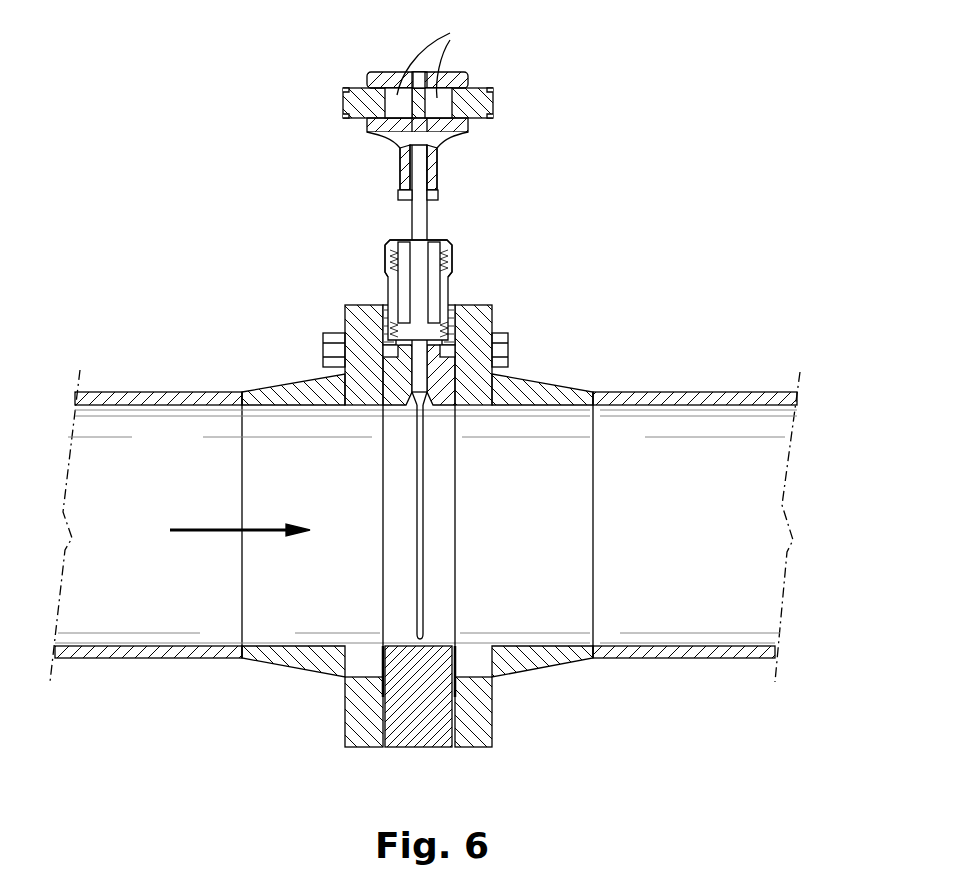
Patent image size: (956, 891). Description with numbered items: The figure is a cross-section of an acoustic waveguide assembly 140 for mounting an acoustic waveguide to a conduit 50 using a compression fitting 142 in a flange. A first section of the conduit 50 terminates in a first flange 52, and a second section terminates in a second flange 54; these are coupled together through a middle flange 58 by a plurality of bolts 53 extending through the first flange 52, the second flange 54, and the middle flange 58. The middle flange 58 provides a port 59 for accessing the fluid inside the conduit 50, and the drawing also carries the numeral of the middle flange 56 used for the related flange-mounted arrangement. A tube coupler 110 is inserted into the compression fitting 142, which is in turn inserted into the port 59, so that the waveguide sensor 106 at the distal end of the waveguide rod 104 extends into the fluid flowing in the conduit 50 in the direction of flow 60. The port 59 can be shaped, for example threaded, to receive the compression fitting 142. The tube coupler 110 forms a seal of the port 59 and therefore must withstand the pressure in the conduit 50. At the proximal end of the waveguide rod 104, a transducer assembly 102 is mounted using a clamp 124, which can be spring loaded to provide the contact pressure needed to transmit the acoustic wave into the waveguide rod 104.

The conduit 50 is at (648, 397).
The first flange 52 is at (520, 388).
The bolts 53 is at (500, 345).
The second flange 54 is at (310, 388).
The middle flange 56 is at (430, 722).
The middle flange 58 is at (383, 370).
The port 59 is at (425, 408).
The direction of flow 60 is at (195, 530).
The transducer assembly 102 is at (445, 62).
The waveguide rod 104 is at (410, 212).
The waveguide sensor 106 is at (425, 548).
The tube coupler 110 is at (430, 242).
The clamp 124 is at (365, 88).
The acoustic waveguide assembly 140 is at (540, 168).
The compression fitting 142 is at (455, 258).